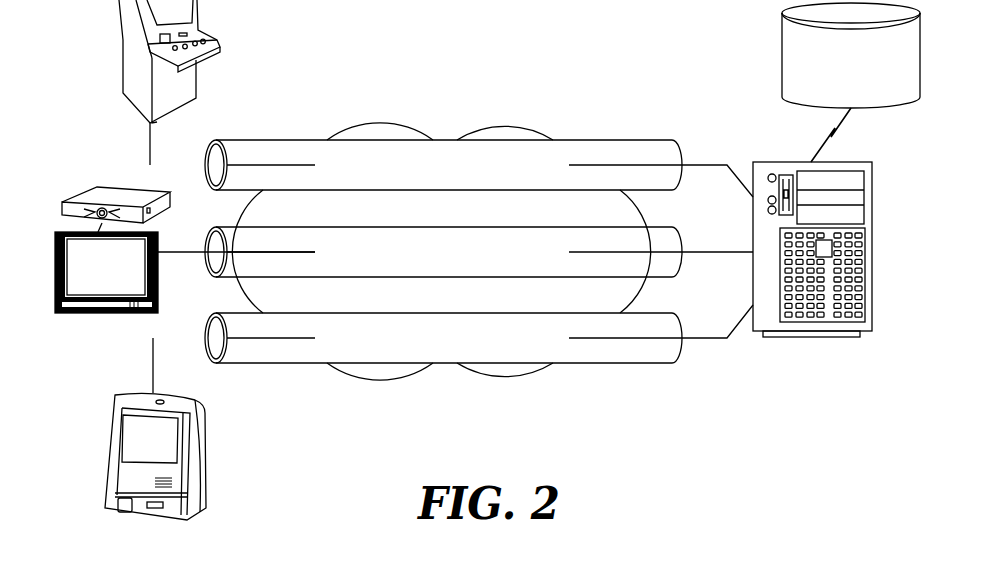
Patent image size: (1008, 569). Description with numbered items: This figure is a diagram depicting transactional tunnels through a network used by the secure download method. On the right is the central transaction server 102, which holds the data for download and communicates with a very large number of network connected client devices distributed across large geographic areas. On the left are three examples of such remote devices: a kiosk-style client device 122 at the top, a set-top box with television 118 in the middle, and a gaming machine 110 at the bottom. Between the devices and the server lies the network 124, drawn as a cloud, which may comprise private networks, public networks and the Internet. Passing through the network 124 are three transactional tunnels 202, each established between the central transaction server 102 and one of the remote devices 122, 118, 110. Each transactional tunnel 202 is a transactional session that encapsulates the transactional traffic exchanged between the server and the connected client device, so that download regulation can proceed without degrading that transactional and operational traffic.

The network connected client device 122 is at (127, 50).
The network connected client device 118 is at (46, 219).
The network 124 is at (528, 125).
The transactional tunnel 202 is at (683, 153).
The central transaction server 102 is at (825, 354).
The network connected client device 110 is at (207, 480).